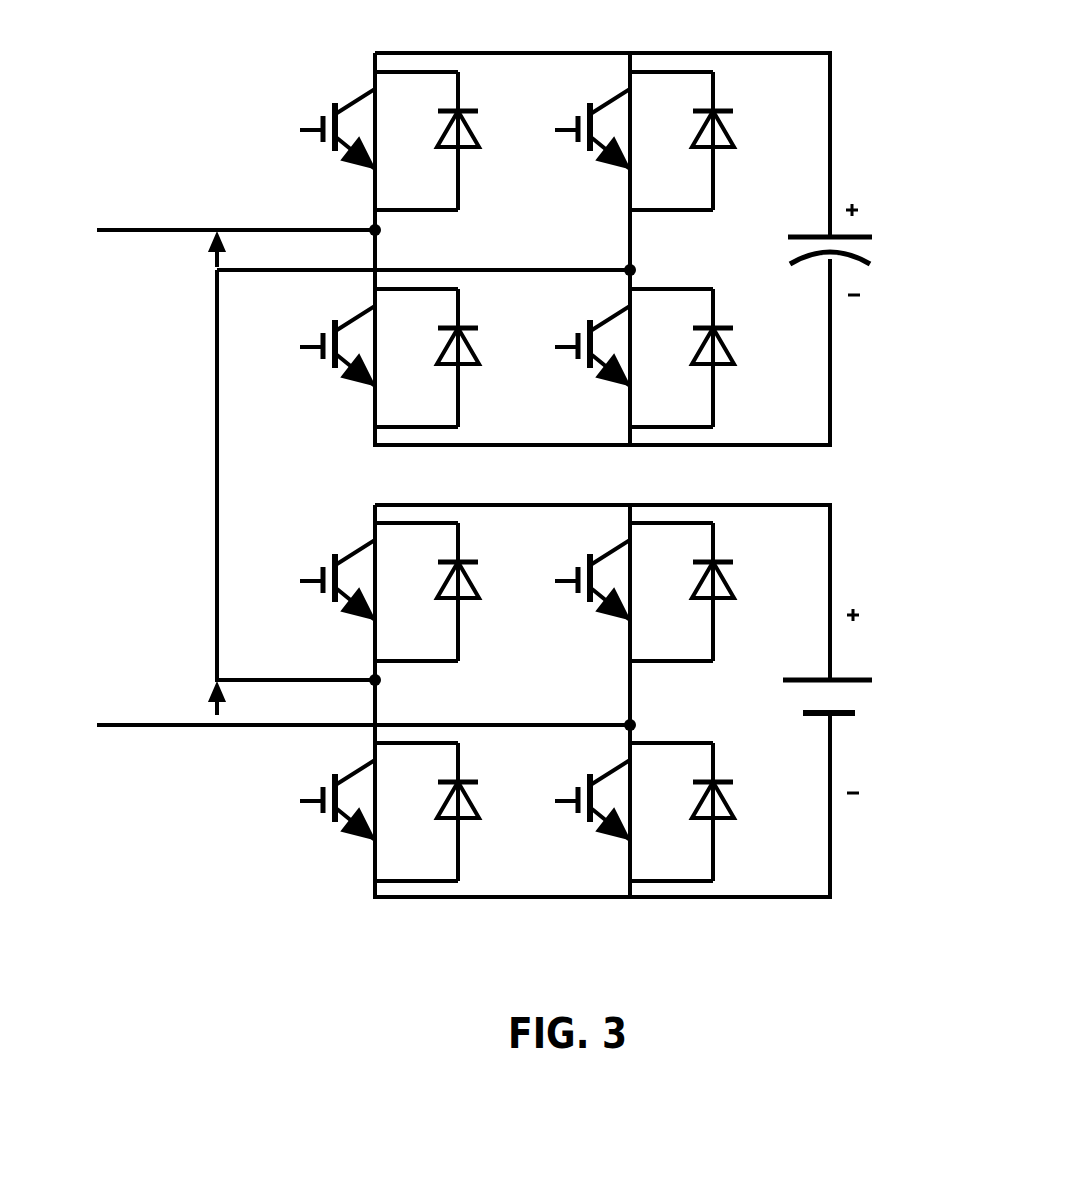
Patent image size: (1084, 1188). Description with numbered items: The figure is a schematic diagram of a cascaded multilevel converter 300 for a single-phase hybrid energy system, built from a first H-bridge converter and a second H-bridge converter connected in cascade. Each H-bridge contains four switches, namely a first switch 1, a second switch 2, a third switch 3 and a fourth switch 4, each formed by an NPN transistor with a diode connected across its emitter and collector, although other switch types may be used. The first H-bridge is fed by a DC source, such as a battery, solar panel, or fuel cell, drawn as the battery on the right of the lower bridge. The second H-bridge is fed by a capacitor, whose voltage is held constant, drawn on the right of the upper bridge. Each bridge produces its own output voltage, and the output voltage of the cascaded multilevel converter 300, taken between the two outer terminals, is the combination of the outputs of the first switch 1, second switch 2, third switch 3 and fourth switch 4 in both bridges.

The cascaded multilevel converter 300 is at (942, 64).
The switch S1 1 is at (368, 366).
The switch S2 2 is at (624, 366).
The switch S3 3 is at (368, 585).
The switch S4 4 is at (624, 585).